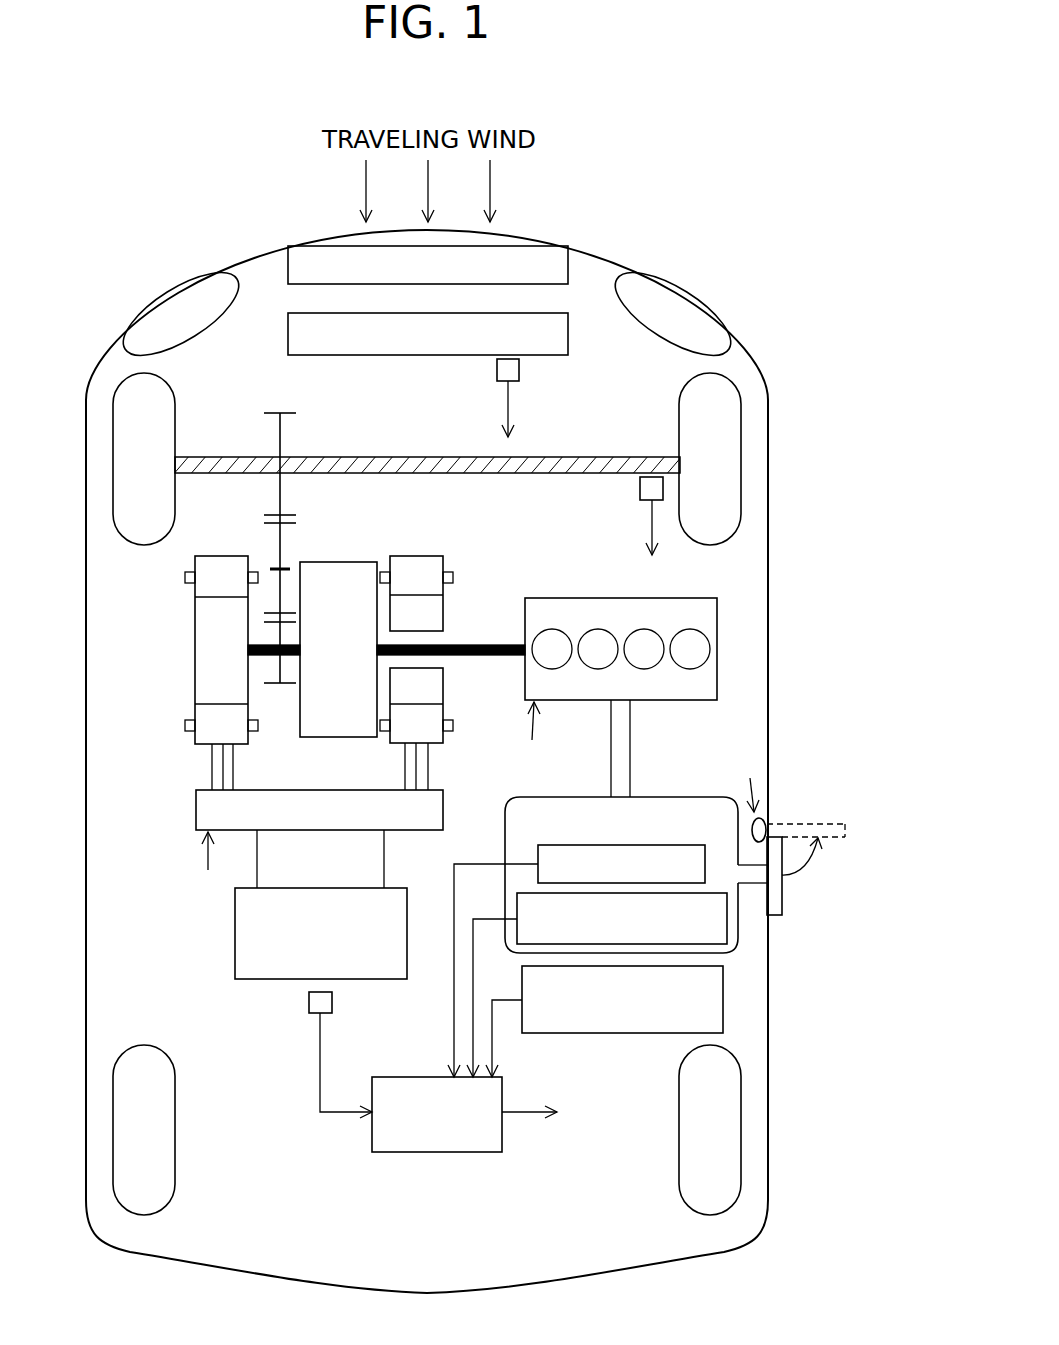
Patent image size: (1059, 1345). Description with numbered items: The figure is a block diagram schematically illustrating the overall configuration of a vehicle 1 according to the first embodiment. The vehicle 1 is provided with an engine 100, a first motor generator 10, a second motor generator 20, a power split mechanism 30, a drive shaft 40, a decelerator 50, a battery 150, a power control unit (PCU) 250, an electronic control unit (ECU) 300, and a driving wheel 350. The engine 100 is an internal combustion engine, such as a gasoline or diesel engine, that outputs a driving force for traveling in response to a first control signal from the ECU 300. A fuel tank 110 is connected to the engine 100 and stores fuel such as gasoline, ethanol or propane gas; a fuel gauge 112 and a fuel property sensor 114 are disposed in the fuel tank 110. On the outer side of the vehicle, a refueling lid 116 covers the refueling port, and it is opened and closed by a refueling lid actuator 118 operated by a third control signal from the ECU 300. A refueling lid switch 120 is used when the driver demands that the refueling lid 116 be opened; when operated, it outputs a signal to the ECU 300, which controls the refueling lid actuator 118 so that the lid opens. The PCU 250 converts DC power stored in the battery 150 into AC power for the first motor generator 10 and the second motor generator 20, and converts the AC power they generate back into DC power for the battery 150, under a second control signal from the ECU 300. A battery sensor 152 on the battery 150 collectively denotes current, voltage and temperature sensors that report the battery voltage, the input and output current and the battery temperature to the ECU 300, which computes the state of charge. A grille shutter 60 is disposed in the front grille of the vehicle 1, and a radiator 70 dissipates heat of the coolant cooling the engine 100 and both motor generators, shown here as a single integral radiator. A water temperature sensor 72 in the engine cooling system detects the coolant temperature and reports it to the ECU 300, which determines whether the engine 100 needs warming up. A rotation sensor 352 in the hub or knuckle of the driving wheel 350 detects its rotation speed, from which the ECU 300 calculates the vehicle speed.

The vehicle 1 is at (308, 96).
The first motor generator 10 is at (412, 556).
The second motor generator 20 is at (218, 556).
The power split mechanism 30 is at (333, 562).
The drive shaft 40 is at (262, 660).
The decelerator 50 is at (281, 412).
The grille shutter 60 is at (530, 238).
The radiator 70 is at (568, 331).
The water temperature sensor 72 is at (519, 365).
The engine 100 is at (549, 597).
The fuel tank 110 is at (572, 797).
The fuel gauge 112 is at (687, 845).
The fuel property sensor 114 is at (712, 945).
The refueling lid 116 is at (782, 915).
The refueling lid actuator 118 is at (767, 812).
The refueling lid switch 120 is at (723, 1000).
The battery 150 is at (235, 936).
The battery sensor 152 is at (332, 1000).
The power control unit (PCU) 250 is at (196, 810).
The electronic control unit (ECU) 300 is at (400, 1152).
The driving wheel 350 is at (680, 392).
The rotation sensor 352 is at (640, 490).